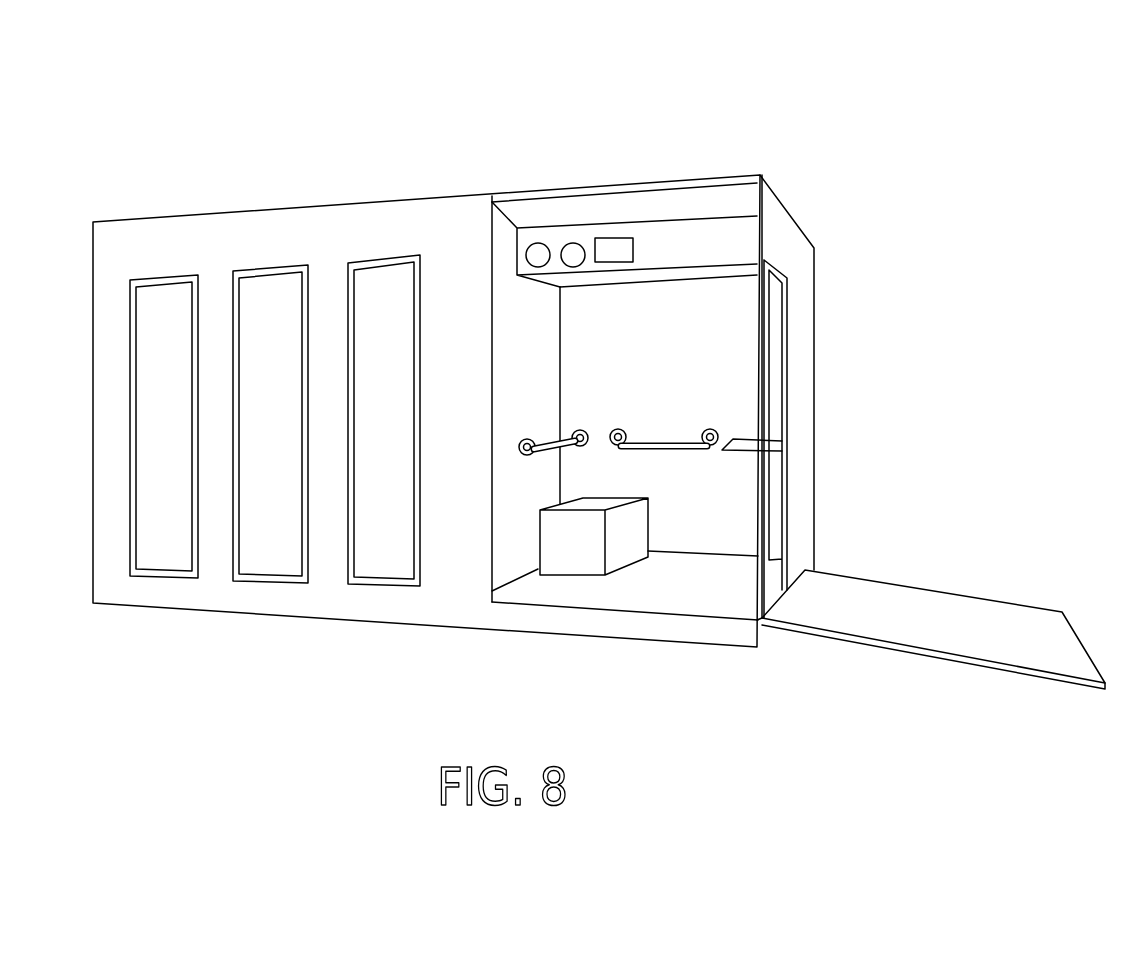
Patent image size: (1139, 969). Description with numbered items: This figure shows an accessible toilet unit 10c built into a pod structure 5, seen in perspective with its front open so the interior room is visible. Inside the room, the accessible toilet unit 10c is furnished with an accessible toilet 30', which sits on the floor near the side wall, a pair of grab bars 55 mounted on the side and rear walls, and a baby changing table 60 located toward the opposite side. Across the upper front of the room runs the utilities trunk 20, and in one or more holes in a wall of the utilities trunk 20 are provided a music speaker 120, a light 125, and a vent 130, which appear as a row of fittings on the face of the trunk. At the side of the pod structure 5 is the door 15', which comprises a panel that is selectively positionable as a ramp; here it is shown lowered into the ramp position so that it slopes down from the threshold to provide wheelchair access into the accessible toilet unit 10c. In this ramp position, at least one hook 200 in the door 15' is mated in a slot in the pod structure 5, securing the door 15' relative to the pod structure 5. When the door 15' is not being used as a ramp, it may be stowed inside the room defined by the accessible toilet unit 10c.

The pod structure 5 is at (150, 101).
The accessible toilet unit 10c is at (824, 228).
The door 15' is at (933, 614).
The utilities trunk 20 is at (661, 289).
The accessible toilet 30' is at (559, 606).
The grab bars 55 is at (548, 441).
The baby changing table 60 is at (748, 439).
The music speaker 120 is at (522, 252).
The light 125 is at (575, 239).
The vent 130 is at (639, 250).
The hook 200 is at (768, 636).